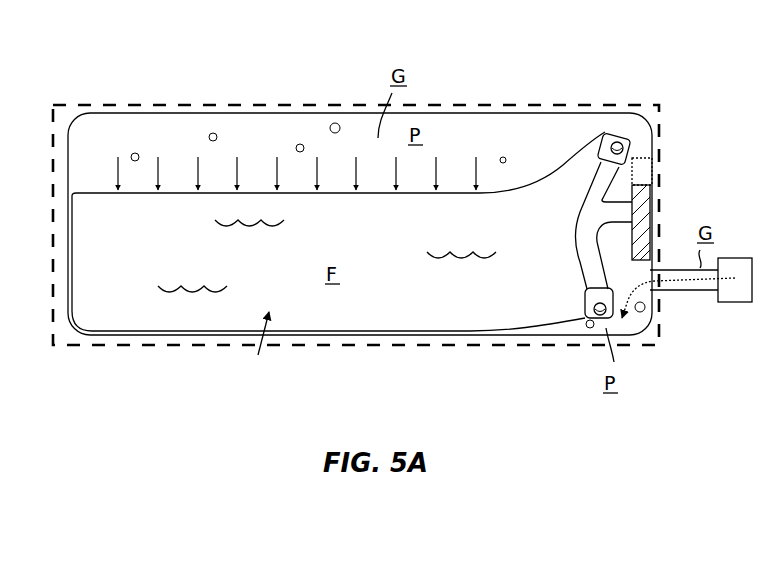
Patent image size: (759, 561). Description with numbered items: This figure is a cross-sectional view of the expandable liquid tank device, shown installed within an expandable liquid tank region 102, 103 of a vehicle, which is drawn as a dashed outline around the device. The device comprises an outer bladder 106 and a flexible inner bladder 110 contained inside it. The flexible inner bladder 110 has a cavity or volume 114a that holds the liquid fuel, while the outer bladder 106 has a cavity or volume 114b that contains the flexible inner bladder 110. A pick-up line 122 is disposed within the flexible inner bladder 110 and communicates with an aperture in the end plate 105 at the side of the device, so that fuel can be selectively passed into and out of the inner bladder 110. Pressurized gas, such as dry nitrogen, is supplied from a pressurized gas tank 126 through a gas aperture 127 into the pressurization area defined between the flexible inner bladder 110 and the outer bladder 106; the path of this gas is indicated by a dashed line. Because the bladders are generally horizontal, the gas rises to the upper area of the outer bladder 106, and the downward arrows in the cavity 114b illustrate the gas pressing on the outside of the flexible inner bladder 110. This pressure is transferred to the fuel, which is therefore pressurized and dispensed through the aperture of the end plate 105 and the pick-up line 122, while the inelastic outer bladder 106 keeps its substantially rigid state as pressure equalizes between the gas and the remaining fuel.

The expandable liquid tank region 102 is at (441, 345).
The expandable liquid tank region 103 is at (356, 275).
The end plate 105 is at (668, 160).
The outer bladder 106 is at (163, 113).
The flexible inner bladder 110 is at (563, 165).
The cavity or volume 114a is at (264, 352).
The cavity or volume 114b is at (270, 136).
The pick-up line 122 is at (628, 207).
The pressurized gas tank 126 is at (720, 302).
The gas aperture 127 is at (662, 292).